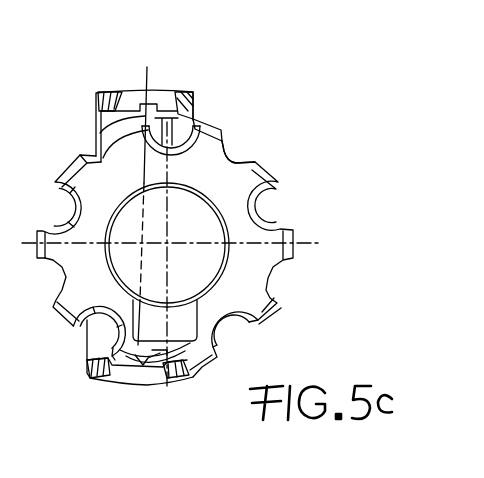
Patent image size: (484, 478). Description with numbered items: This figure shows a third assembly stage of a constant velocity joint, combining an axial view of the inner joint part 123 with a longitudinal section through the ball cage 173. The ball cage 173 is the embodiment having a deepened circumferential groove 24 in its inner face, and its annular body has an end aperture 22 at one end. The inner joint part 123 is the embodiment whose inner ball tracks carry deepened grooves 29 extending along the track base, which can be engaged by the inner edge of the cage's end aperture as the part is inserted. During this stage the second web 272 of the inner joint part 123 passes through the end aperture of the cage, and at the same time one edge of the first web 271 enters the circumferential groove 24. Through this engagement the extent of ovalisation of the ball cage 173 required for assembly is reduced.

The ball cage 173 is at (86, 77).
The end aperture 22 is at (95, 133).
The circumferential groove 24 is at (152, 111).
The deepened grooves 29 is at (182, 105).
The second web 272 is at (207, 123).
The inner joint part 123 is at (237, 140).
The first web 271 is at (130, 382).